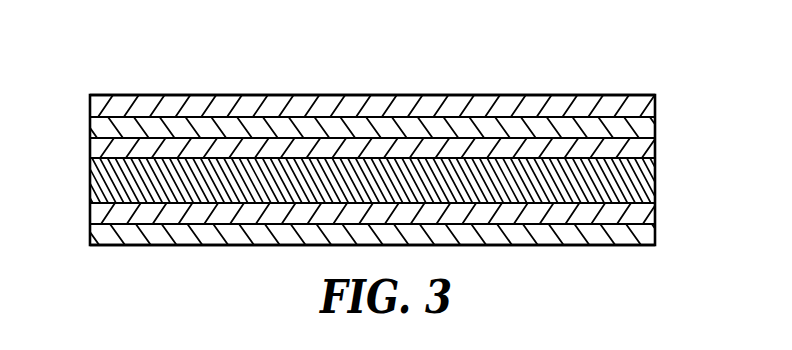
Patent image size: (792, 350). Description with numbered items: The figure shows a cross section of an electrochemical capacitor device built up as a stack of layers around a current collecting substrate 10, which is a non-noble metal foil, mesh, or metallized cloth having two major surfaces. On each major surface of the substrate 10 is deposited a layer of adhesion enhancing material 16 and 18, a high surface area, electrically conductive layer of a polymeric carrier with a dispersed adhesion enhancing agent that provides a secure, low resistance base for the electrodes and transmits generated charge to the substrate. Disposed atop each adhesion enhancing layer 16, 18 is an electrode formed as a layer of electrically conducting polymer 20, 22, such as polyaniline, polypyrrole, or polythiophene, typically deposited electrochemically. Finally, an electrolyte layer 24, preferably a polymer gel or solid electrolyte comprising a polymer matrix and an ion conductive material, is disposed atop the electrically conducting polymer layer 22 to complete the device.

The current collecting substrate 10 is at (655, 172).
The adhesion enhancing material layer 16 is at (90, 213).
The adhesion enhancing material layer 18 is at (90, 143).
The electrically conducting polymer layer 20 is at (655, 236).
The electrically conducting polymer layer 22 is at (655, 119).
The electrolyte layer 24 is at (651, 96).